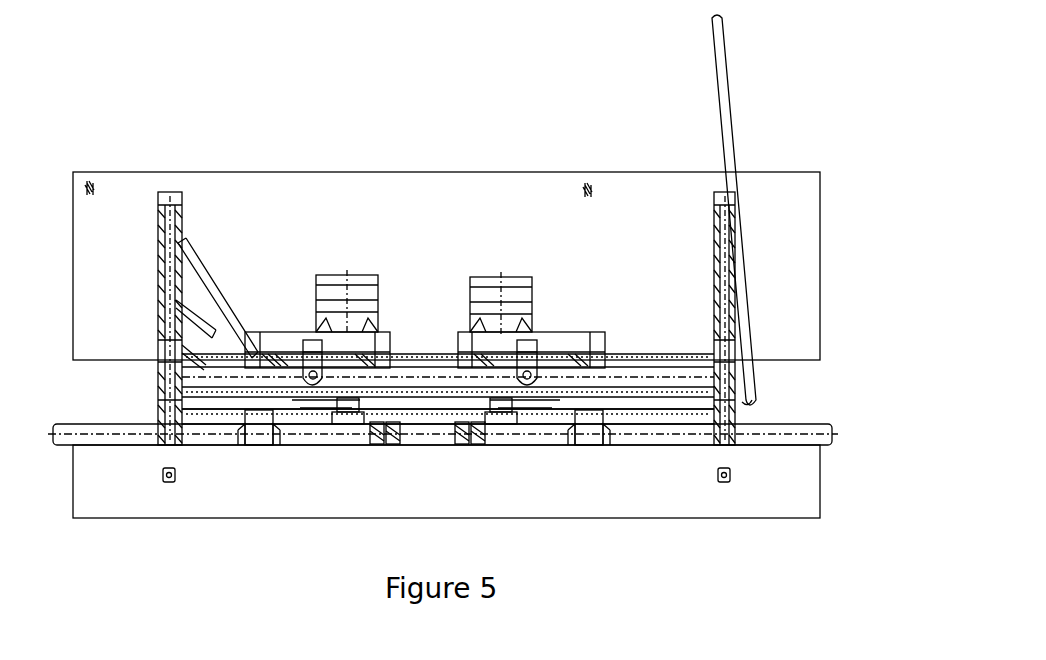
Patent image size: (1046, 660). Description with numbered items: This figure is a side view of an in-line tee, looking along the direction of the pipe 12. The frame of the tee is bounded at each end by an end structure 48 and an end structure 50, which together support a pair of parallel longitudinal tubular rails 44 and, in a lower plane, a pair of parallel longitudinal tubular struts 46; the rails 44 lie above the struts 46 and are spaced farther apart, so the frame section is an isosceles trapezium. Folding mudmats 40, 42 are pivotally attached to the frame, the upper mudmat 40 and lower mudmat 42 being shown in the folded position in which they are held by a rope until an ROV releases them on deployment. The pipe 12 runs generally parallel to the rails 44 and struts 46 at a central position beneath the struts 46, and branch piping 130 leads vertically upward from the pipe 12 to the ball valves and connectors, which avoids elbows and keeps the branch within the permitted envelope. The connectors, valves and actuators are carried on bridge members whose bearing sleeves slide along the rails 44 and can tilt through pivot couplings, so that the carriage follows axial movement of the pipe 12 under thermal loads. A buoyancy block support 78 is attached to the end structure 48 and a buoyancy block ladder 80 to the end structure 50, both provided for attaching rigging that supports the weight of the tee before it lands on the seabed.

The pipe 12 is at (85, 430).
The folding mudmat 40 is at (370, 190).
The folding mudmat 42 is at (88, 488).
The tubular rail 44 is at (630, 375).
The tubular strut 46 is at (650, 405).
The end structure 48 is at (158, 355).
The end structure 50 is at (716, 350).
The buoyancy block support 78 is at (162, 277).
The buoyancy block ladder 80 is at (730, 95).
The branch piping 130 is at (500, 412).